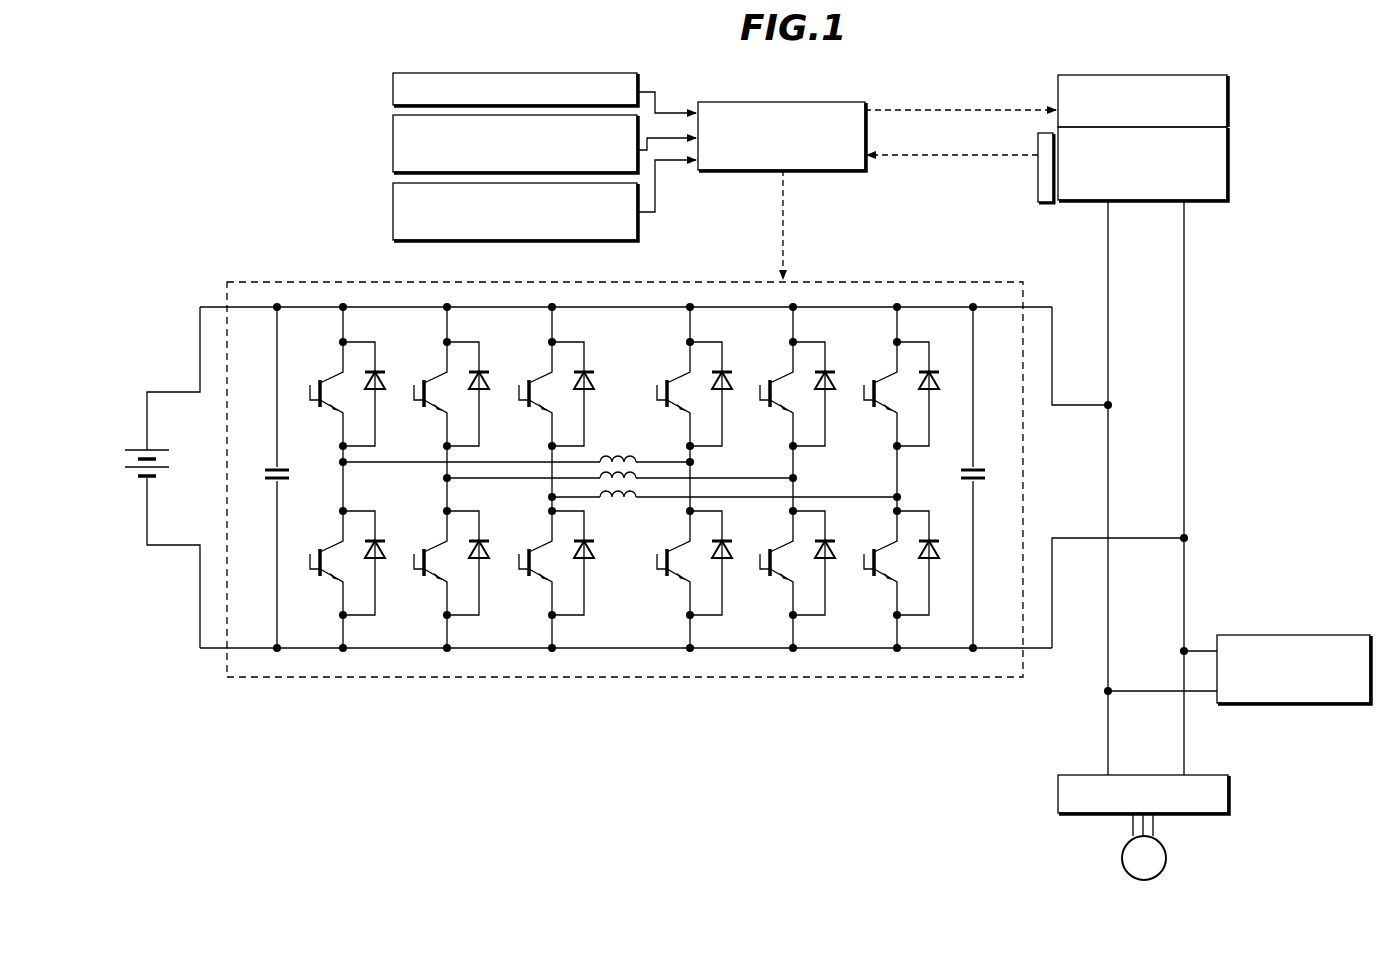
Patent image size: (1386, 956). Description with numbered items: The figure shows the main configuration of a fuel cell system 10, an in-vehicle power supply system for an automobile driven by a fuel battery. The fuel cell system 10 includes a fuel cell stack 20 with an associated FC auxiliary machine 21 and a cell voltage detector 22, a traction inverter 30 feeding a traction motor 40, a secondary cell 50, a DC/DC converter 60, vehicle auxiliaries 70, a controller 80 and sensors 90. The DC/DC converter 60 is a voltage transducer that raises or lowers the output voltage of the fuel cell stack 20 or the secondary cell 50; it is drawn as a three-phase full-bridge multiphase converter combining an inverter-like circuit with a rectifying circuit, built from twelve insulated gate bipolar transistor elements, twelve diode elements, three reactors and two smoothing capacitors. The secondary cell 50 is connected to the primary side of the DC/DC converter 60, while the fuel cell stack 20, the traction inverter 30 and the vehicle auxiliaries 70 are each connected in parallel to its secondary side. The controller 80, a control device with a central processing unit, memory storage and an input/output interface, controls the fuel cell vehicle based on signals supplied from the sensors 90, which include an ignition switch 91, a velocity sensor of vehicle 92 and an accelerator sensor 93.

The fuel cell system 10 is at (195, 176).
The fuel cell stack 20 is at (1227, 185).
The FC auxiliary machine 21 is at (1227, 105).
The cell voltage detector 22 is at (1038, 188).
The traction inverter 30 is at (1228, 797).
The traction motor 40 is at (1166, 862).
The secondary cell 50 is at (125, 461).
The DC/DC converter 60 is at (595, 678).
The vehicle auxiliaries 70 is at (1300, 635).
The controller 80 is at (736, 171).
The sensors 90 is at (342, 70).
The ignition switch 91 is at (393, 97).
The velocity sensor of vehicle 92 is at (393, 156).
The accelerator sensor 93 is at (393, 214).